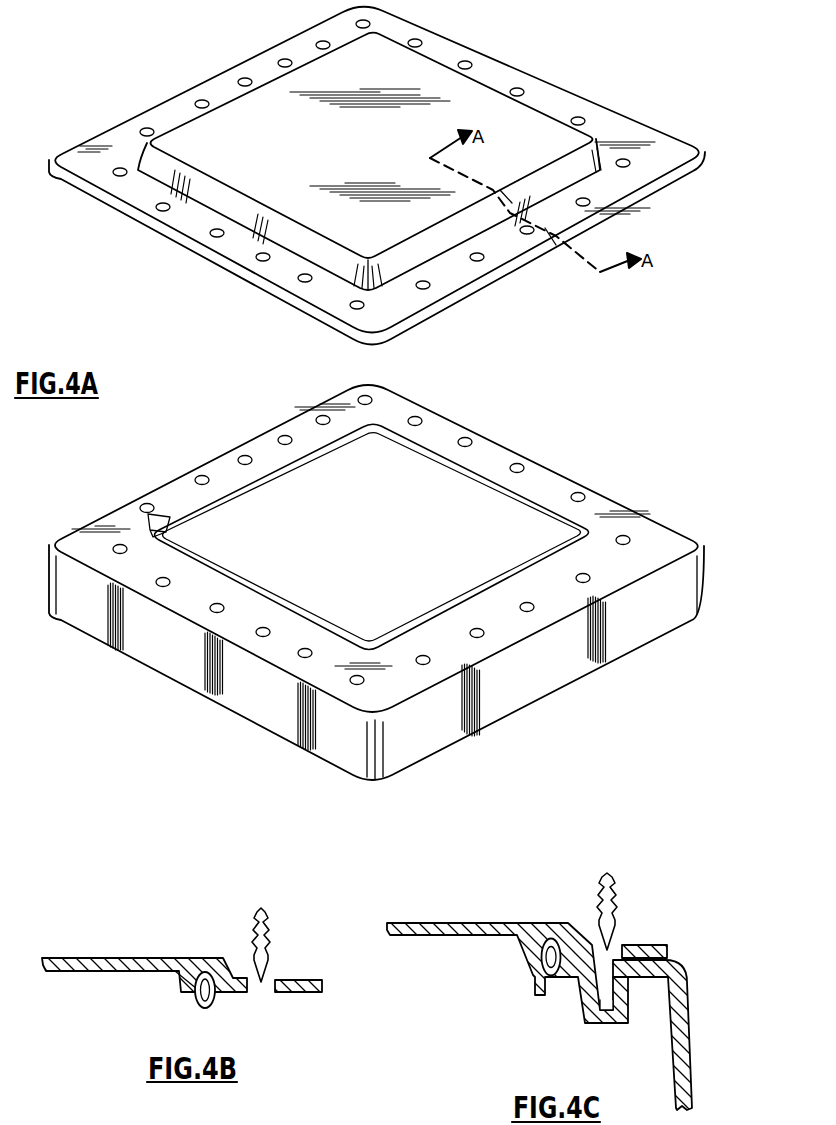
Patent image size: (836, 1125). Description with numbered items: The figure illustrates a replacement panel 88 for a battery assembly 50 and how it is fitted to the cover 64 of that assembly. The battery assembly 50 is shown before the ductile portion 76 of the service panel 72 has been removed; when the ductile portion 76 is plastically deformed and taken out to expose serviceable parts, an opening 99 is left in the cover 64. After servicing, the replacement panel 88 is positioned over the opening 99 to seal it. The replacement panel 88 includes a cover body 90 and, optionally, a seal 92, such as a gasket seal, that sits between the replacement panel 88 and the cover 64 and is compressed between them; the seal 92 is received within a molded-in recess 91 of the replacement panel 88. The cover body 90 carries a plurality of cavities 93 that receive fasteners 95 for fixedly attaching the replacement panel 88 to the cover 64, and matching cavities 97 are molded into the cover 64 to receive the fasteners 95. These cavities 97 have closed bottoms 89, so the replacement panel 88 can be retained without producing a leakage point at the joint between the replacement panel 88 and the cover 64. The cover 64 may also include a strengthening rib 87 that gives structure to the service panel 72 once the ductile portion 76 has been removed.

In FIG. 4A, the battery assembly 50 is at (665, 322).
In FIG. 4A, the cover 64 is at (650, 613).
In FIG. 4C, the cover 64 is at (683, 1020).
In FIG. 4A, the service panel 72 is at (391, 582).
In FIG. 4C, the service panel 72 is at (681, 1020).
In FIG. 4A, the ductile portion 76 is at (493, 472).
In FIG. 4C, the strengthening rib 87 is at (538, 990).
In FIG. 4A, the replacement panel 88 is at (165, 75).
In FIG. 4B, the replacement panel 88 is at (134, 973).
In FIG. 4C, the replacement panel 88 is at (523, 966).
In FIG. 4C, the closed bottoms 89 is at (618, 1024).
In FIG. 4A, the cover body 90 is at (497, 90).
In FIG. 4B, the cover body 90 is at (116, 961).
In FIG. 4C, the cover body 90 is at (477, 927).
In FIG. 4B, the molded-in recess 91 is at (180, 983).
In FIG. 4C, the molded-in recess 91 is at (567, 939).
In FIG. 4B, the seal 92 is at (197, 1005).
In FIG. 4C, the seal 92 is at (557, 976).
In FIG. 4A, the cavities 93 is at (259, 259).
In FIG. 4B, the cavities 93 is at (263, 990).
In FIG. 4C, the cavities 93 is at (618, 938).
In FIG. 4B, the fasteners 95 is at (268, 933).
In FIG. 4C, the fasteners 95 is at (618, 903).
In FIG. 4A, the matching cavities 97 is at (256, 638).
In FIG. 4C, the matching cavities 97 is at (606, 1008).
In FIG. 4C, the opening 99 is at (498, 986).